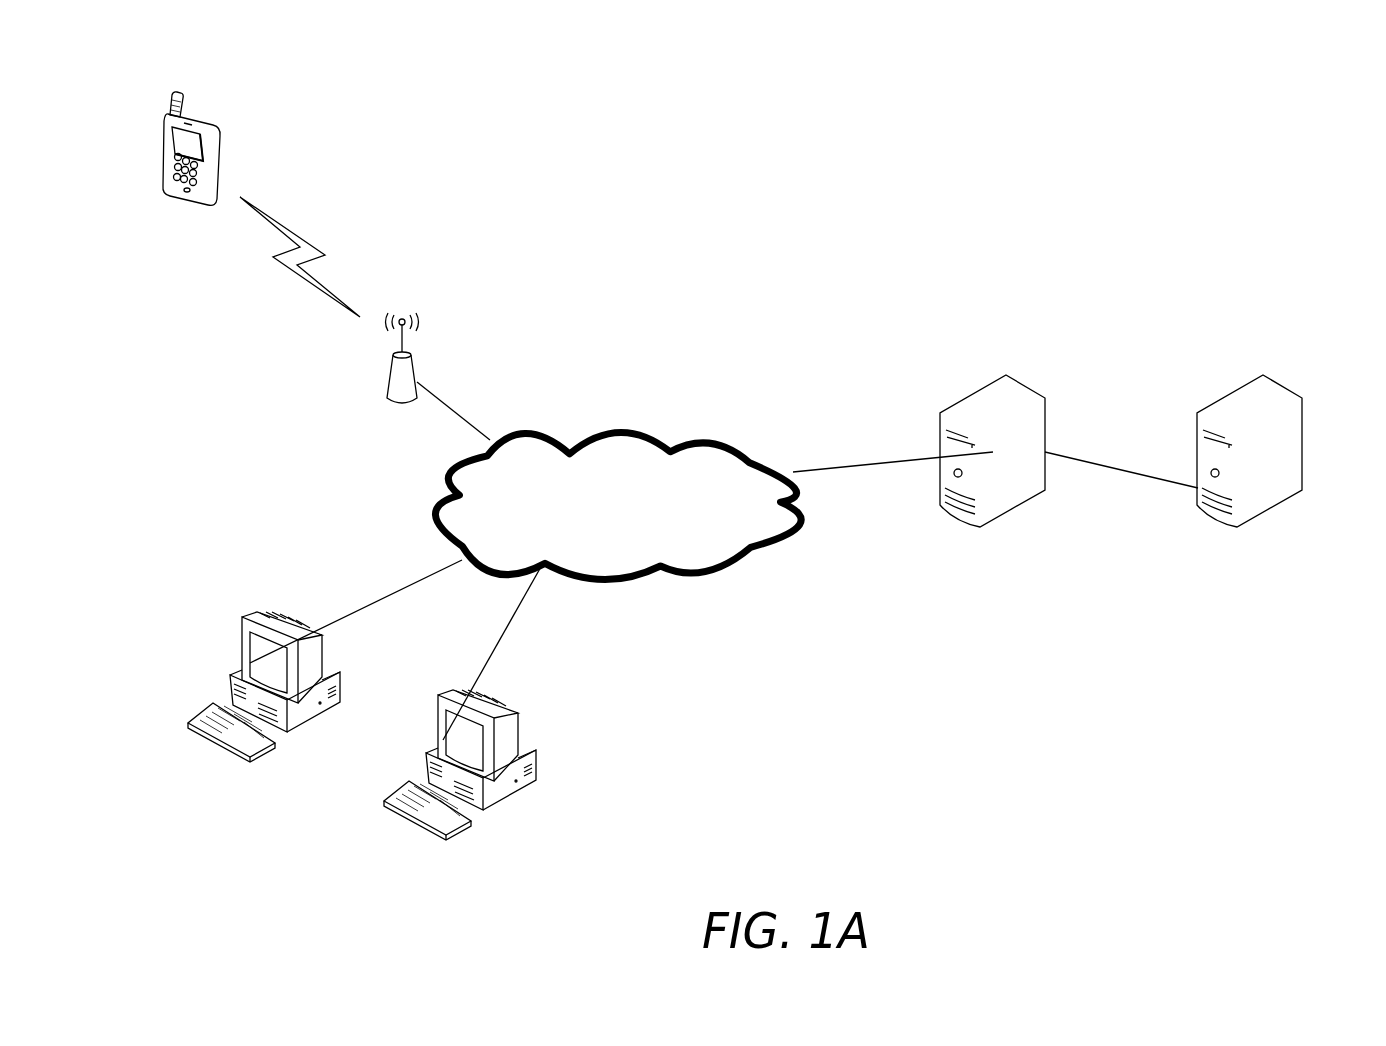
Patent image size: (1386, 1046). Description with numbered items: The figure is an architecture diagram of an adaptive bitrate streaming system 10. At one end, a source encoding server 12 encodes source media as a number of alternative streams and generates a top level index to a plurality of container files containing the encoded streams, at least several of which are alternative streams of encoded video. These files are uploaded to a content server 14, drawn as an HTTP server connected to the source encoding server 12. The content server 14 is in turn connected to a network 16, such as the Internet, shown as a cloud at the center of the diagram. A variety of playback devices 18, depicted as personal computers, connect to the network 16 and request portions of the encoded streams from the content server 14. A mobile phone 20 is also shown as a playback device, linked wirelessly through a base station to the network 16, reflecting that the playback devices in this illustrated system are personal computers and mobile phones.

The adaptive bitrate streaming system 10 is at (793, 252).
The source encoding server 12 is at (1262, 395).
The content server 14 is at (1010, 395).
The network 16 is at (655, 573).
The playback devices 18 is at (222, 748).
The mobile phone playback device 20 is at (212, 118).